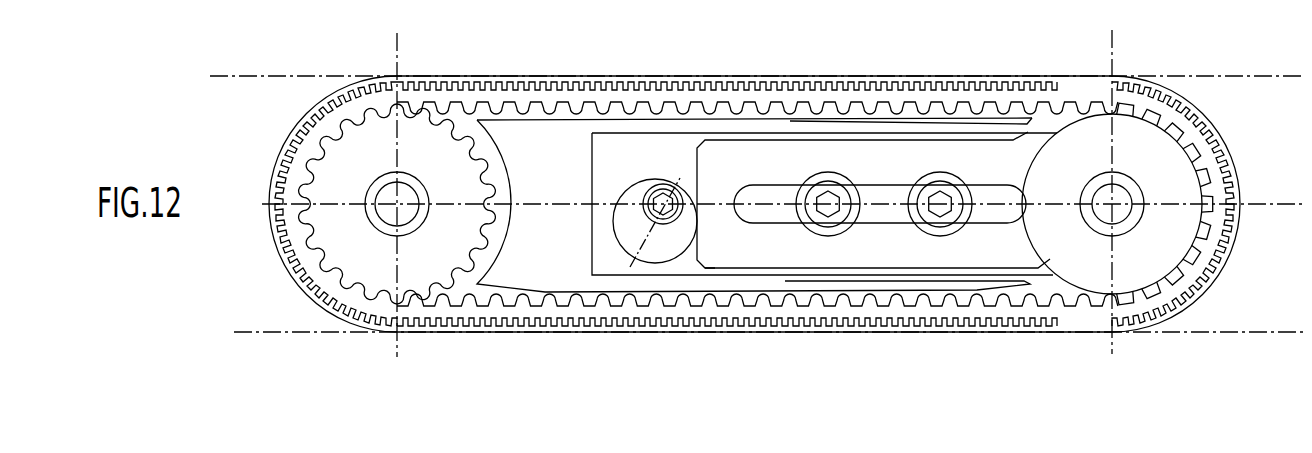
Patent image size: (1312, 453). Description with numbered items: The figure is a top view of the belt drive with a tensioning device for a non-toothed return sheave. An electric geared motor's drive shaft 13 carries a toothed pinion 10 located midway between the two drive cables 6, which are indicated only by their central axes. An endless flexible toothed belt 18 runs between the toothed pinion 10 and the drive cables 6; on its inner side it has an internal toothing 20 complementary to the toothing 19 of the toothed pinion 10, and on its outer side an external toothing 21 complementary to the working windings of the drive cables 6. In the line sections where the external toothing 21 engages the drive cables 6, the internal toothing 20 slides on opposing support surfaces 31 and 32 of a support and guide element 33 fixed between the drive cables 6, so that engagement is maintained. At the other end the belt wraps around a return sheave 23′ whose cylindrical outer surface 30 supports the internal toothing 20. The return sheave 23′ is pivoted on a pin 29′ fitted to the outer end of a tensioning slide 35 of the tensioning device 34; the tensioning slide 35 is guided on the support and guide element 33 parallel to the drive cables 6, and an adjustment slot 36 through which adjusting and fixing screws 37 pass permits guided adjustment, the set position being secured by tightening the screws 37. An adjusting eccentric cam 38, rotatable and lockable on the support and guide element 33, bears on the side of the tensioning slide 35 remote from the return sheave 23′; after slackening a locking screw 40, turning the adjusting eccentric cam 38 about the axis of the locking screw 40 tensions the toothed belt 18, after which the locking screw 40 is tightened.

The drive cable 6 is at (1253, 77).
The toothed pinion 10 is at (333, 223).
The drive shaft 13 is at (407, 213).
The toothed belt 18 is at (690, 73).
The toothing 19 is at (493, 243).
The internal toothing 20 is at (533, 108).
The external toothing 21 is at (833, 84).
The return sheave 23′ is at (1050, 148).
The pin 29′ is at (1102, 210).
The outer surface 30 is at (1024, 240).
The support surface 31 is at (630, 119).
The support surface 32 is at (605, 292).
The support and guide element 33 is at (559, 168).
The tensioning device 34 is at (700, 268).
The tensioning slide 35 is at (758, 233).
The adjustment slot 36 is at (885, 208).
The adjusting and fixing screws 37 is at (937, 192).
The adjusting eccentric cam 38 is at (622, 217).
The locking screw 40 is at (661, 196).